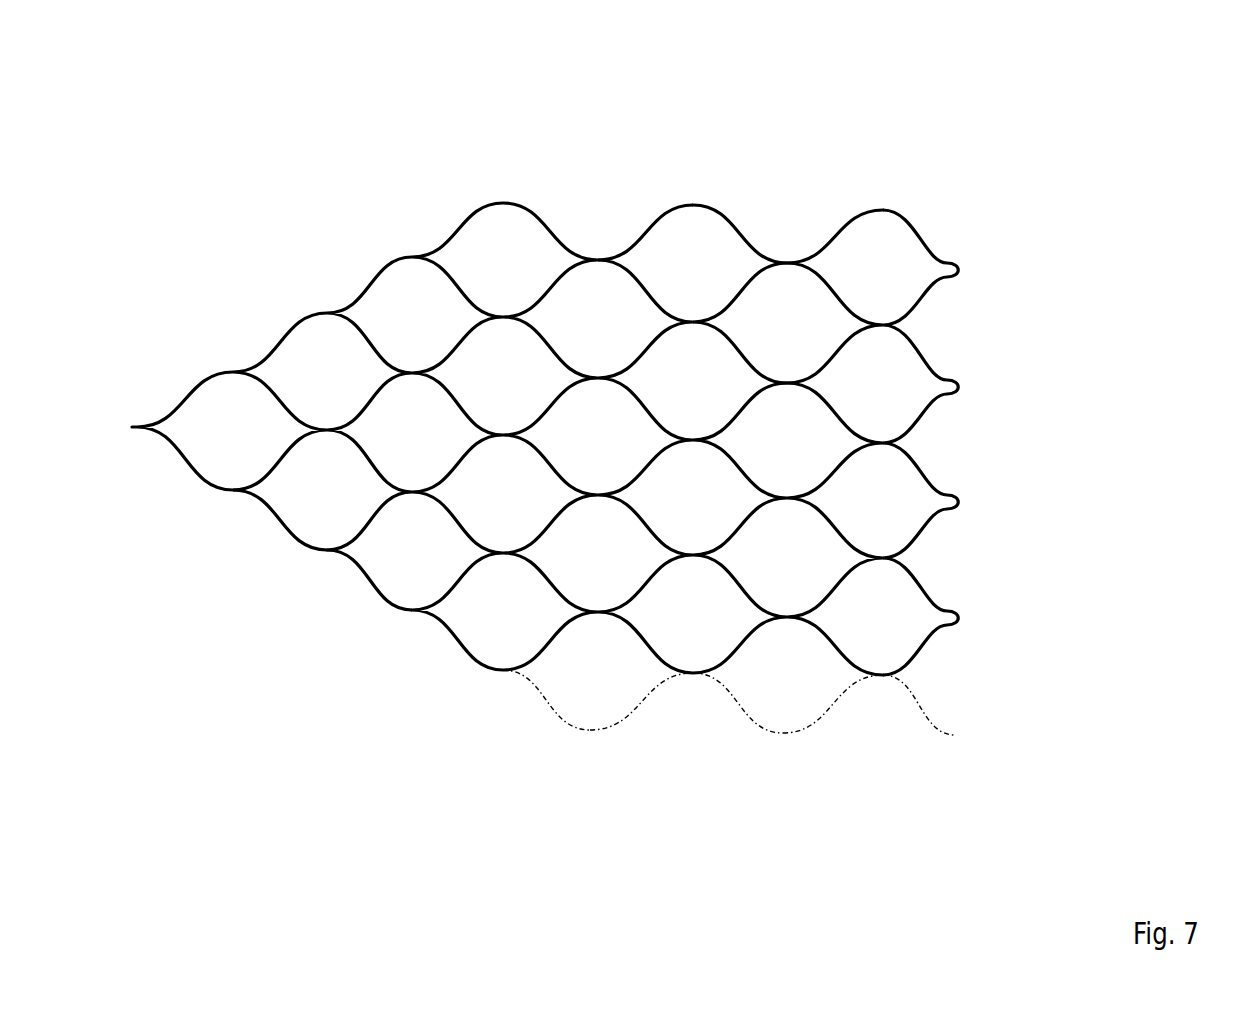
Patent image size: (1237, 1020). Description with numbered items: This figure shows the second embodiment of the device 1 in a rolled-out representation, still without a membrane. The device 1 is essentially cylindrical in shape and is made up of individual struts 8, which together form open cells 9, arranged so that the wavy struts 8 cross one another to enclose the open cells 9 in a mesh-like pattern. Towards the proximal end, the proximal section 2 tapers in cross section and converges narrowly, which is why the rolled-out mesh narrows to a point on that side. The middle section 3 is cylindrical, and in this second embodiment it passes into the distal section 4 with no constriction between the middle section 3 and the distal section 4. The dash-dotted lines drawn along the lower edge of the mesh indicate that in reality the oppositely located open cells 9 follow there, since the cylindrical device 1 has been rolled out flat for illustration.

The device 1 is at (409, 199).
The proximal section 2 is at (231, 569).
The middle section 3 is at (585, 771).
The distal section 4 is at (885, 714).
The struts 8 is at (643, 234).
The open cells 9 is at (791, 316).